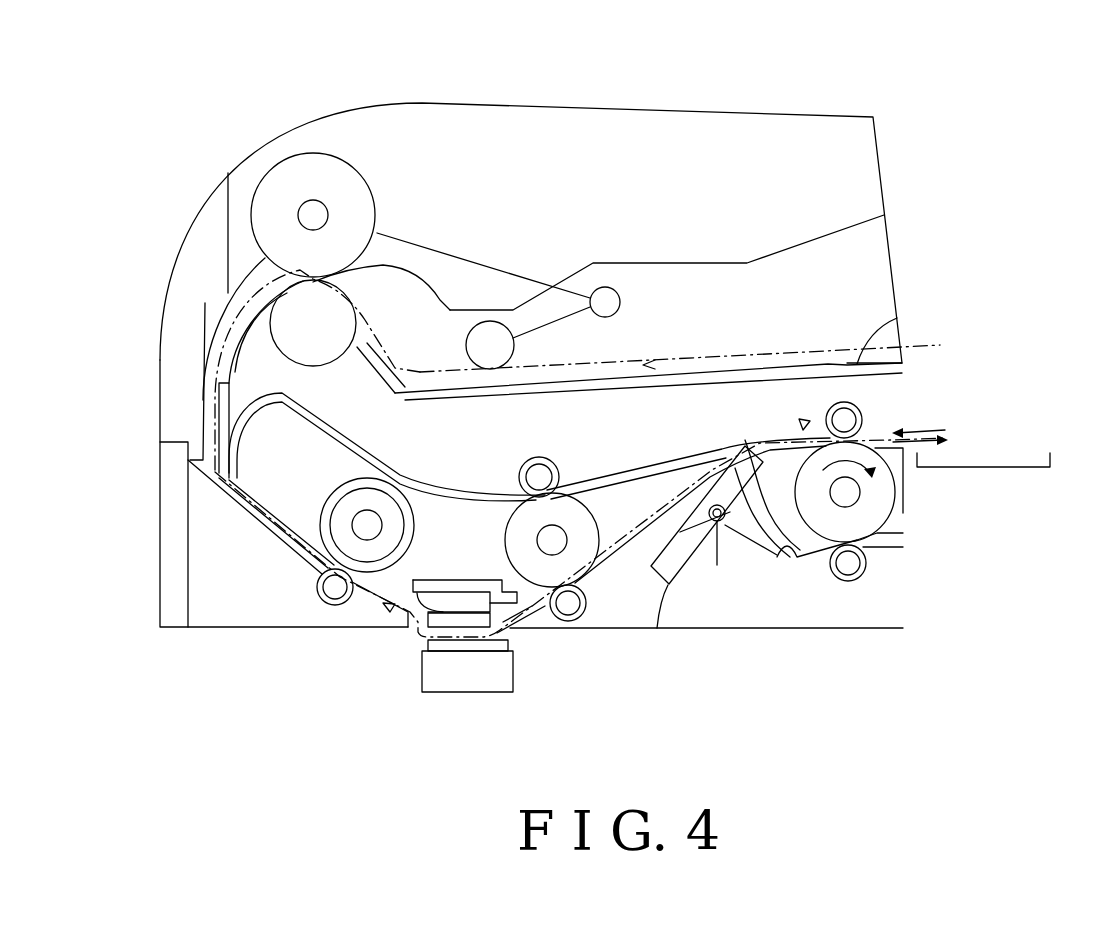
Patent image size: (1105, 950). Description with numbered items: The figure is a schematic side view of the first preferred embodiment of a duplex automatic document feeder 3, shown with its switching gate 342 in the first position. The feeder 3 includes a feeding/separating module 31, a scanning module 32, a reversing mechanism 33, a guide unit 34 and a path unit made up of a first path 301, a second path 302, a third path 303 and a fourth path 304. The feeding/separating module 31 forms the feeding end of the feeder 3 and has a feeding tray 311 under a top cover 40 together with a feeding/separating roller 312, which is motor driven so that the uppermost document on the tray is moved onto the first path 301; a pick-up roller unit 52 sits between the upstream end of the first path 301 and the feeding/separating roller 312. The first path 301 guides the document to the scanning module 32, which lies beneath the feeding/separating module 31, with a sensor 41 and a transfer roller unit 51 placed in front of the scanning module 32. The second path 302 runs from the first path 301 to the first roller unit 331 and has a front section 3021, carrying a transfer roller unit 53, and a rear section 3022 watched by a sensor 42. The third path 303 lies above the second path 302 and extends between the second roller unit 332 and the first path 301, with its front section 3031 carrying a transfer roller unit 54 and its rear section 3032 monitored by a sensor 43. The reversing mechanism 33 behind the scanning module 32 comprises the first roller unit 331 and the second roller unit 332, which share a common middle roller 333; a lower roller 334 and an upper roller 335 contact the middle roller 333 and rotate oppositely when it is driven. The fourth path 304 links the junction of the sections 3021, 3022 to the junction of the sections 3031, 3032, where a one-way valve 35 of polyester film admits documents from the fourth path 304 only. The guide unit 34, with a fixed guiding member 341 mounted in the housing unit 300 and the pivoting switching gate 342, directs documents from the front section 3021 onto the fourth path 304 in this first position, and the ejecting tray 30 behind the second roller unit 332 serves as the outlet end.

The duplex automatic document feeder 3 is at (640, 94).
The top cover 40 is at (363, 147).
The housing unit 300 is at (180, 550).
The pick-up roller unit 52 is at (273, 177).
The first path 301 is at (227, 332).
The feeding/separating module 31 is at (511, 264).
The feeding/separating roller 312 is at (483, 335).
The one-way valve 35 is at (698, 378).
The feeding tray 311 is at (897, 318).
The front section of the third path 3031 is at (424, 490).
The sensor 41 is at (388, 614).
The transfer roller unit 51 is at (318, 592).
The transfer roller unit 54 is at (530, 458).
The transfer roller unit 53 is at (585, 613).
The third path 303 is at (612, 474).
The second path 302 is at (733, 563).
The front section of the second path 3021 is at (523, 610).
The scanning module 32 is at (460, 663).
The rear section of the third path 3032 is at (757, 443).
The fourth path 304 is at (740, 456).
The guide unit 34 is at (717, 548).
The fixed guiding member 341 is at (712, 543).
The switching gate 342 is at (670, 586).
The rear section of the second path 3022 is at (812, 572).
The sensor 42 is at (797, 553).
The sensor 43 is at (806, 423).
The upper roller 335 is at (864, 422).
The middle roller 333 is at (877, 515).
The reversing mechanism 33 is at (907, 495).
The lower roller 334 is at (853, 580).
The first roller unit 331 is at (877, 564).
The second roller unit 332 is at (945, 430).
The ejecting tray 30 is at (1035, 441).